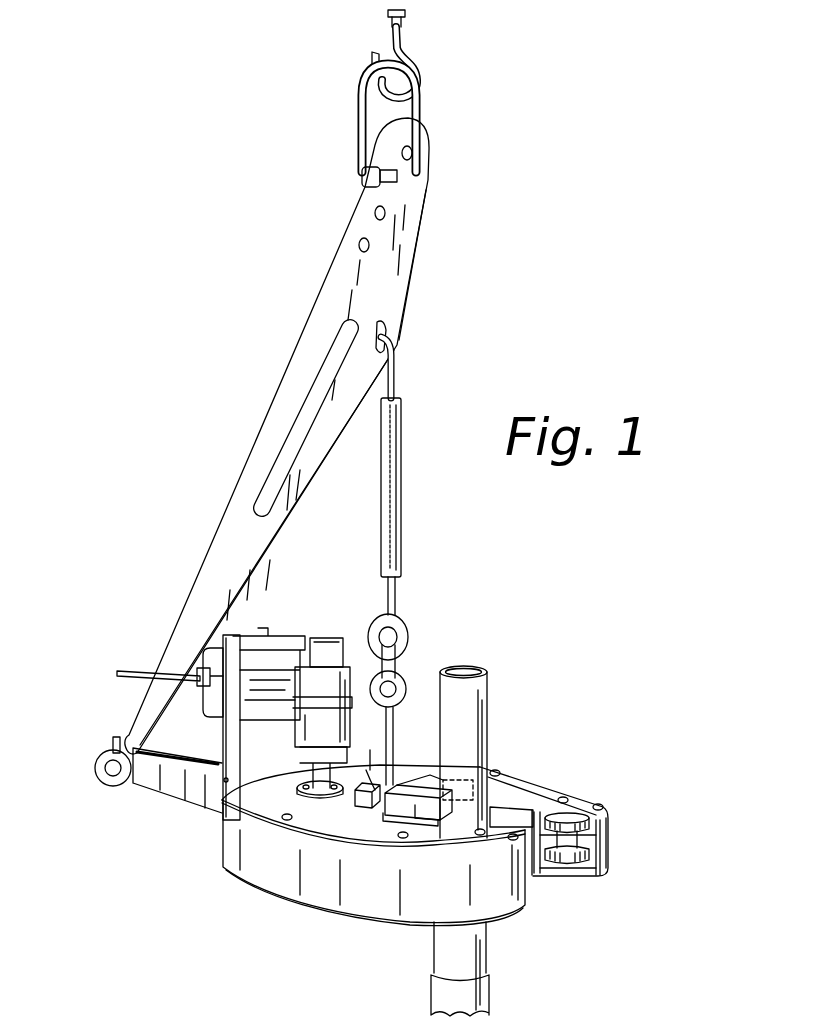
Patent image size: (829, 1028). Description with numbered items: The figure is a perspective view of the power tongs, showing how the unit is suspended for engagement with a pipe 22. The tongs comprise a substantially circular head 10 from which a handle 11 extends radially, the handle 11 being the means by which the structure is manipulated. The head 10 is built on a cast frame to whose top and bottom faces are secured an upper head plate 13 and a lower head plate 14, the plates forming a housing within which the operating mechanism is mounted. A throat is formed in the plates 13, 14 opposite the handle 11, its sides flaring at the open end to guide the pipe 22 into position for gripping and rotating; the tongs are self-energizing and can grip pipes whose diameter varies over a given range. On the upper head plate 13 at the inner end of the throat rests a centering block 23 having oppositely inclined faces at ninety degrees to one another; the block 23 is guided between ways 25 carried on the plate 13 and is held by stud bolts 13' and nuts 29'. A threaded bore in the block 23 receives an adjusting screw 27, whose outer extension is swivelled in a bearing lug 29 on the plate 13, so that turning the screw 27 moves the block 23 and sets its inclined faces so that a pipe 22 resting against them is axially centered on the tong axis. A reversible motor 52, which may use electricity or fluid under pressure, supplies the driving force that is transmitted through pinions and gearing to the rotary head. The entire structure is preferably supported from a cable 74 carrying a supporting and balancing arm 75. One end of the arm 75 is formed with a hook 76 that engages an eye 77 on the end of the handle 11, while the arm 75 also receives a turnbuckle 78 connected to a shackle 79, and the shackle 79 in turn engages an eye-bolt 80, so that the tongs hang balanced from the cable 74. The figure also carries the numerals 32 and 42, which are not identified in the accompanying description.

The head 10 is at (315, 900).
The handle 11 is at (175, 788).
The upper head plate 13 is at (551, 821).
The stud bolts 13' is at (373, 748).
The lower head plate 14 is at (578, 868).
The pipe 22 is at (489, 706).
The centering block 23 is at (431, 774).
The ways 25 is at (437, 812).
The adjusting screw 27 is at (384, 800).
The bearing lug 29 is at (349, 806).
The nuts 29' is at (363, 768).
The pin 32 is at (558, 814).
The roller 42 is at (596, 842).
The motor 52 is at (280, 700).
The cable 74 is at (405, 32).
The supporting and balancing arm 75 is at (405, 252).
The hook 76 is at (110, 742).
The eye 77 is at (107, 786).
The turnbuckle 78 is at (402, 478).
The shackle 79 is at (397, 660).
The eye-bolt 80 is at (394, 760).